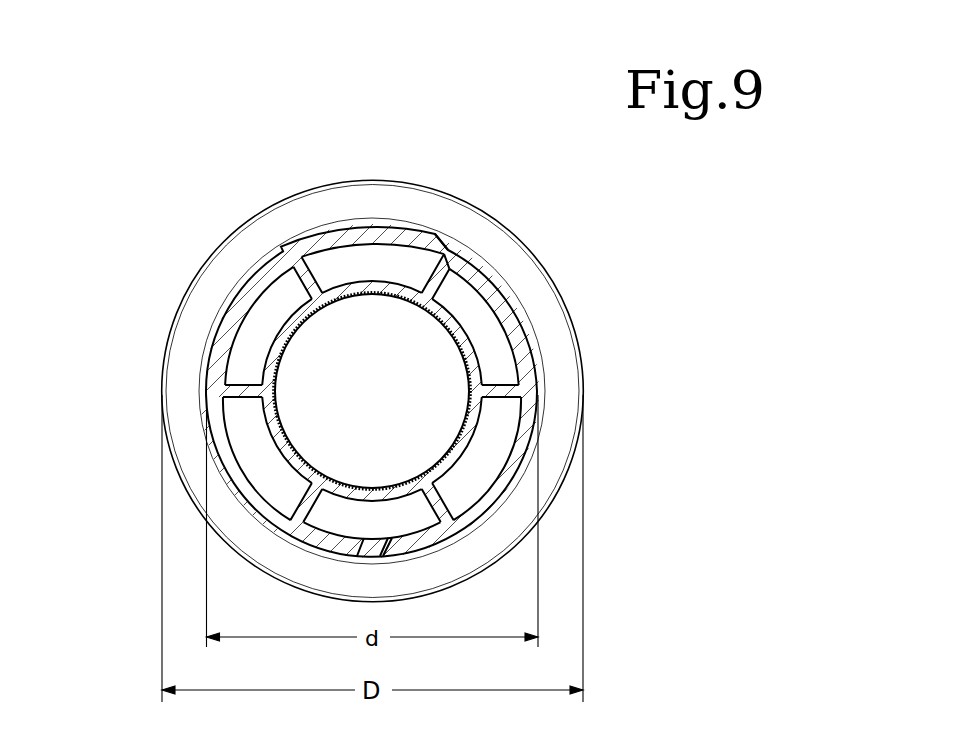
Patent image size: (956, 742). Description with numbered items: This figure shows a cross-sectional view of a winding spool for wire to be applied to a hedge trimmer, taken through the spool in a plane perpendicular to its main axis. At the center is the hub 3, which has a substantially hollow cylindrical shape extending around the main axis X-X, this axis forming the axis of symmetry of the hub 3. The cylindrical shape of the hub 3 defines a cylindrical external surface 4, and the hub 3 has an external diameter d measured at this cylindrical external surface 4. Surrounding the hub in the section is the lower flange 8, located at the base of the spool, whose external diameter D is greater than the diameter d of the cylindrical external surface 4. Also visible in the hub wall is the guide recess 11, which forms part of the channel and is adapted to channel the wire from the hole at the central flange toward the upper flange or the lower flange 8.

The hub 3 is at (274, 397).
The cylindrical external surface 4 is at (238, 290).
The lower flange 8 is at (182, 372).
The guide recess 11 is at (452, 243).